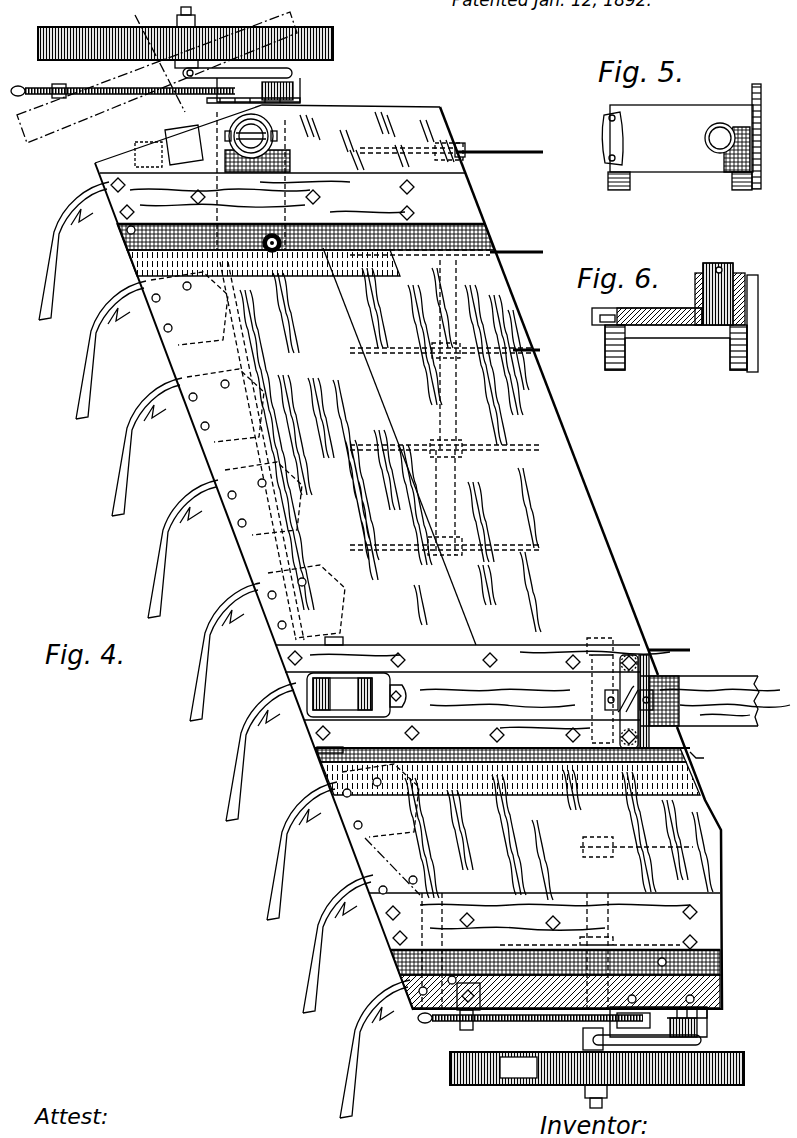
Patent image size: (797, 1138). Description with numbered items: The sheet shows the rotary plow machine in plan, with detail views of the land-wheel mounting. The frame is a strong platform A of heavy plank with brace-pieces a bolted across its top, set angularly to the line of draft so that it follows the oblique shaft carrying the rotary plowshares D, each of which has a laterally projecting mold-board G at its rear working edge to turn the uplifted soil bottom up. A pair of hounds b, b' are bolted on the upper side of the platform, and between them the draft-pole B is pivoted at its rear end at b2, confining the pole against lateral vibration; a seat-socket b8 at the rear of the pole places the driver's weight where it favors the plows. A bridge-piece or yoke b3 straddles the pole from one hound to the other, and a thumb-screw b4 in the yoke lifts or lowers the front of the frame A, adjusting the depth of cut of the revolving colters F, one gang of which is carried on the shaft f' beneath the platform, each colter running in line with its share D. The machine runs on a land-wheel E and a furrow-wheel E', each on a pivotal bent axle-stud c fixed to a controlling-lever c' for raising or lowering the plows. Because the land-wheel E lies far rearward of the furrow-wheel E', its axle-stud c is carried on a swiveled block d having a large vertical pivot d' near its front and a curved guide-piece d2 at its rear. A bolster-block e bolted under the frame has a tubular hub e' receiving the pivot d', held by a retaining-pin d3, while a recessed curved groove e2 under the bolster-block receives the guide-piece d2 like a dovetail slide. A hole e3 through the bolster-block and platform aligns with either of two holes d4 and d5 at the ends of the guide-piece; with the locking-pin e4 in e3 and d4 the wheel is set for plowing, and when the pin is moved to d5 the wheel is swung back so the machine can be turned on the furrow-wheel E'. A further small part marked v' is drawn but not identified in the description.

In FIG. 4, the platform A is at (408, 557).
In FIG. 4, the draft-pole B is at (537, 699).
In FIG. 4, the rotary plowshares D is at (386, 636).
In FIG. 4, the land-wheel E is at (184, 75).
In FIG. 4, the furrow-wheel E' is at (597, 1080).
In FIG. 4, the revolving colters F is at (586, 451).
In FIG. 4, the mold-boards G is at (224, 650).
In FIG. 4, the brace-pieces a is at (410, 561).
In FIG. 4, the hound b is at (473, 645).
In FIG. 4, the hound b' is at (472, 734).
In FIG. 4, the pole pivot b2 is at (343, 641).
In FIG. 4, the bridge-piece or yoke b3 is at (632, 683).
In FIG. 4, the thumb-screw b4 is at (607, 703).
In FIG. 4, the seat-socket b8 is at (356, 695).
In FIG. 4, the bent axle-stud c is at (432, 556).
In FIG. 4, the controlling-lever c' is at (327, 564).
In FIG. 4, the swiveled block d is at (294, 136).
In FIG. 5, the swiveled block d is at (684, 137).
In FIG. 6, the swiveled block d is at (676, 347).
In FIG. 4, the vertical pivot d' is at (270, 133).
In FIG. 5, the vertical pivot d' is at (724, 140).
In FIG. 6, the vertical pivot d' is at (718, 282).
In FIG. 5, the curved guide-piece d2 is at (607, 134).
In FIG. 6, the curved guide-piece d2 is at (615, 312).
In FIG. 4, the retaining-pin d3 is at (288, 156).
In FIG. 6, the retaining-pin d3 is at (737, 273).
In FIG. 5, the vertical hole d4 is at (611, 161).
In FIG. 5, the vertical hole d5 is at (610, 115).
In FIG. 4, the bolster-block e is at (272, 243).
In FIG. 6, the bolster-block e is at (647, 307).
In FIG. 4, the tubular hub e' is at (209, 137).
In FIG. 6, the tubular hub e' is at (756, 309).
In FIG. 6, the curved groove e2 is at (603, 325).
In FIG. 4, the hole e3 is at (275, 252).
In FIG. 4, the locking-pin e4 is at (268, 254).
In FIG. 4, the colter shaft f' is at (463, 133).
In FIG. 4, the clamp block v' is at (483, 995).